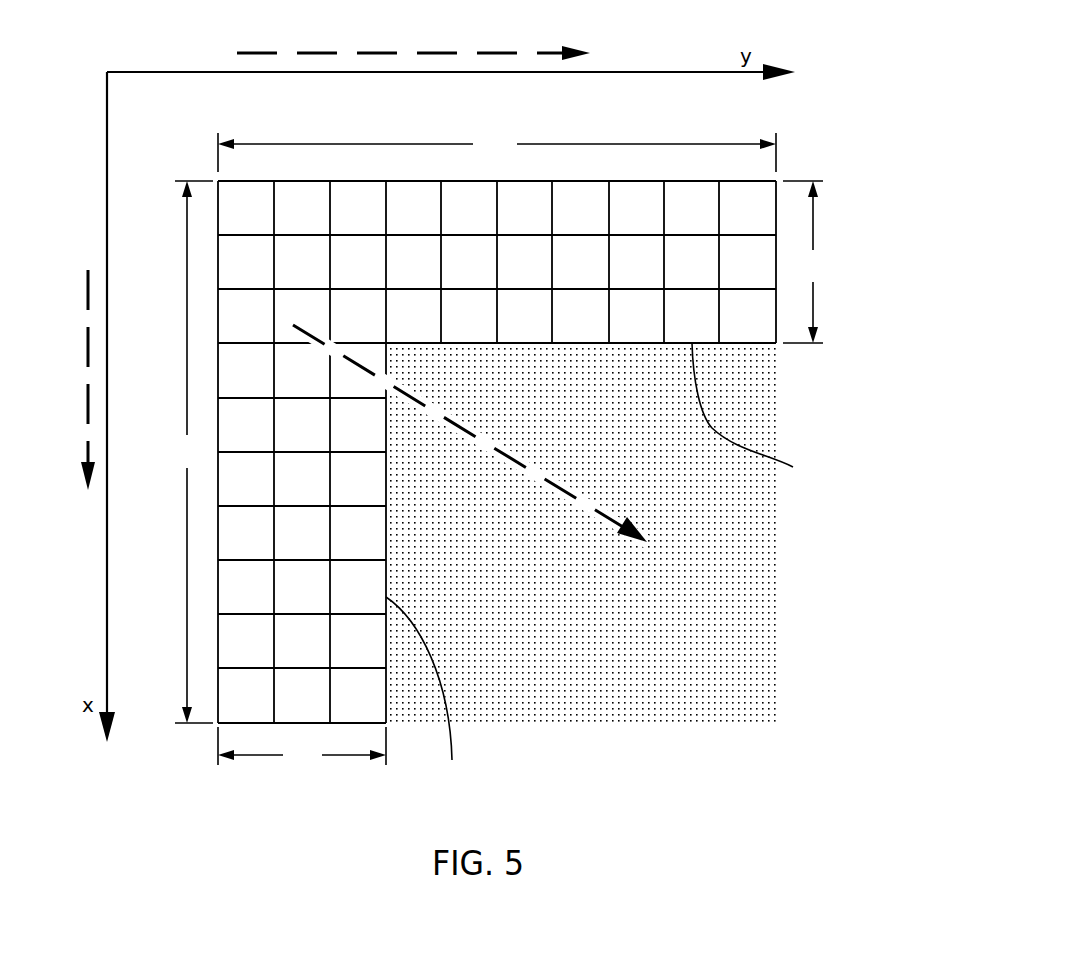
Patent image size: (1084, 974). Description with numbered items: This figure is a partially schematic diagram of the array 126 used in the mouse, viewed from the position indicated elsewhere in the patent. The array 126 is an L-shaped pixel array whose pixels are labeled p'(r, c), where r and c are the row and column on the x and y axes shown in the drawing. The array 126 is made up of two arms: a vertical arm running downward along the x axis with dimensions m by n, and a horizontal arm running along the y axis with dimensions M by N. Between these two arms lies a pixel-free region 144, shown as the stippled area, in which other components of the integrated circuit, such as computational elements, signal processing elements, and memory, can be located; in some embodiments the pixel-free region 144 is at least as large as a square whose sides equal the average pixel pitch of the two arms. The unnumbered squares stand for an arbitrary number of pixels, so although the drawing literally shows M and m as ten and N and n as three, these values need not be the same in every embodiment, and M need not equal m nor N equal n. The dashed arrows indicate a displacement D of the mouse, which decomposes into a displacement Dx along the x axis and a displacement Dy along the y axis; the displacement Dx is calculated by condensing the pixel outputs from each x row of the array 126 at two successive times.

The array 126 is at (848, 398).
The pixel-free region 144 is at (700, 685).
The displacement vector D is at (470, 433).
The x-axis displacement Dx is at (66, 380).
The y displacement Dy is at (413, 33).
The y-axis arm length dimension M is at (497, 152).
The y-axis arm width dimension N is at (803, 262).
The x-axis arm length dimension m is at (194, 452).
The x-axis arm width dimension n is at (302, 746).